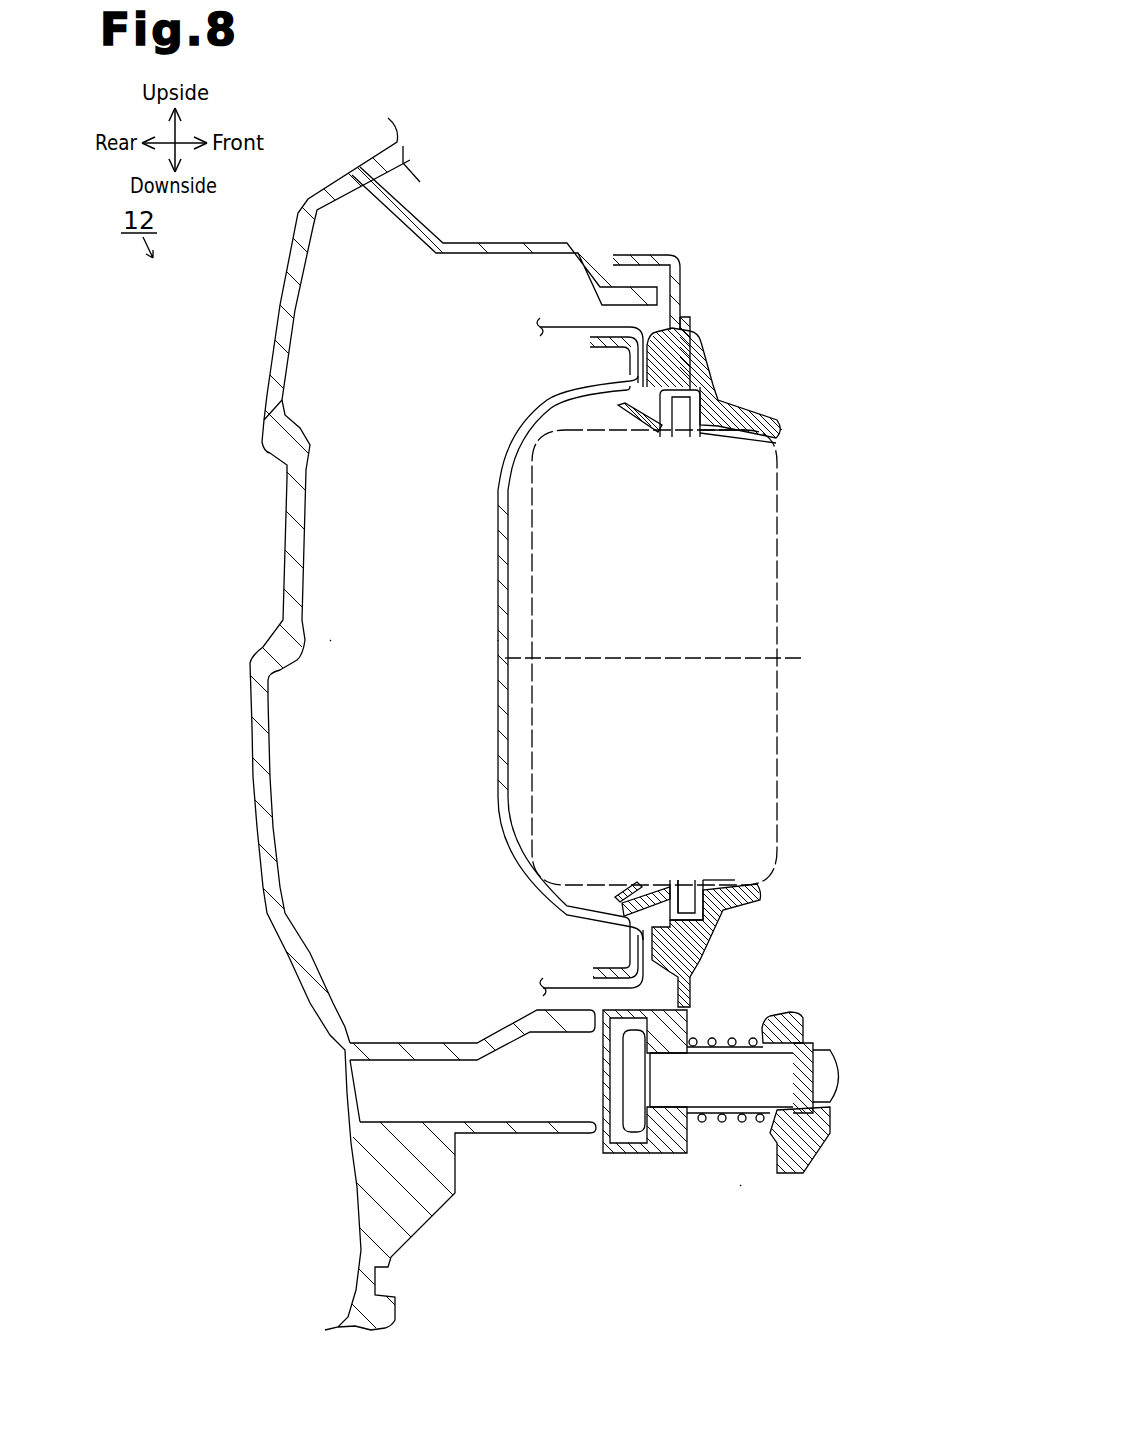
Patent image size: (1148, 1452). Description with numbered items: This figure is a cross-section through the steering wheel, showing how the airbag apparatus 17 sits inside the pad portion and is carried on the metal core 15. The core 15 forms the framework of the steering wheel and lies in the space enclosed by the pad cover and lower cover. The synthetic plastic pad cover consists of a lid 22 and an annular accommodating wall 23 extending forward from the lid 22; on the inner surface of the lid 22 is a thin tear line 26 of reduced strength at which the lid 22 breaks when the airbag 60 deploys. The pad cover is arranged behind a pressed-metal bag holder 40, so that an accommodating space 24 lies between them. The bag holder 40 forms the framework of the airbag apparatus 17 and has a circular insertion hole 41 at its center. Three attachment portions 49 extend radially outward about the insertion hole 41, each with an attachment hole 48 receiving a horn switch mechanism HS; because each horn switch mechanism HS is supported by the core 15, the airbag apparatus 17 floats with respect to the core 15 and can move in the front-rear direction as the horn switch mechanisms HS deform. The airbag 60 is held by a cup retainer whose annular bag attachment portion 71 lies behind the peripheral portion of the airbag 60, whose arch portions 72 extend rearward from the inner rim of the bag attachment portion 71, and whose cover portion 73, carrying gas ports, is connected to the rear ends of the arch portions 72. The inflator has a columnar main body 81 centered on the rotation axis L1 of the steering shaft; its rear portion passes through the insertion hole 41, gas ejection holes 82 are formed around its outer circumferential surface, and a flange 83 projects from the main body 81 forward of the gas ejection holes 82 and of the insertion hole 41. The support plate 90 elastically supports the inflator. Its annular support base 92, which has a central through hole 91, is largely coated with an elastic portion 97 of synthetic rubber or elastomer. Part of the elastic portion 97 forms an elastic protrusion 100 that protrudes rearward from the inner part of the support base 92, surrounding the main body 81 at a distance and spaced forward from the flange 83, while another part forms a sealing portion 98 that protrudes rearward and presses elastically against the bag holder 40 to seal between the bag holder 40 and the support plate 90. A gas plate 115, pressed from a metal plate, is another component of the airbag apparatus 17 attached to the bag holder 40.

The metal core 15 is at (805, 1160).
The airbag apparatus 17 is at (472, 525).
The lid 22 is at (255, 758).
The accommodating wall 23 is at (412, 225).
The accommodating space 24 is at (401, 650).
The tear line 26 is at (280, 432).
The bag holder 40 is at (633, 254).
The insertion hole 41 is at (623, 902).
The attachment hole 48 is at (688, 1123).
The attachment portion 49 is at (688, 1150).
The airbag 60 is at (570, 303).
The bag attachment portion 71 is at (632, 354).
The arch portions 72 is at (575, 391).
The cover portion 73 is at (497, 729).
The main body 81 is at (903, 501).
The gas ejection holes 82 is at (614, 417).
The flange 83 is at (707, 430).
The support plate 90 is at (833, 421).
The through hole 91 is at (775, 434).
The support base 92 is at (715, 936).
The elastic portion 97 is at (757, 890).
The sealing portion 98 is at (673, 655).
The elastic protrusion 100 is at (728, 410).
The gas plate 115 is at (646, 879).
The rotation axis L1 is at (805, 658).
The horn switch mechanism HS is at (744, 1200).